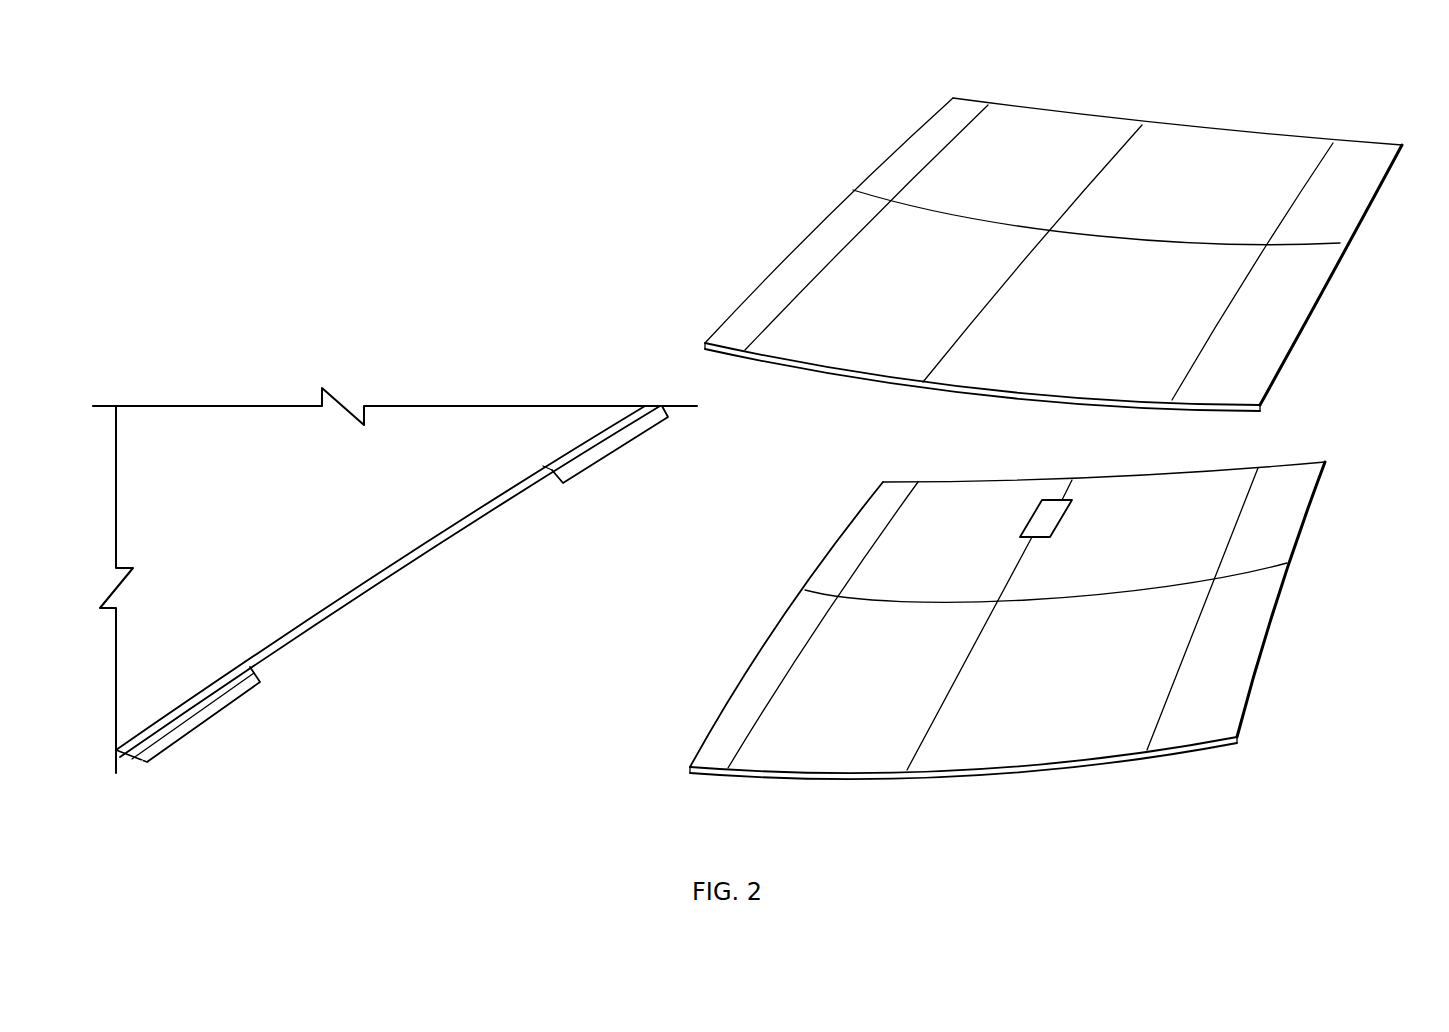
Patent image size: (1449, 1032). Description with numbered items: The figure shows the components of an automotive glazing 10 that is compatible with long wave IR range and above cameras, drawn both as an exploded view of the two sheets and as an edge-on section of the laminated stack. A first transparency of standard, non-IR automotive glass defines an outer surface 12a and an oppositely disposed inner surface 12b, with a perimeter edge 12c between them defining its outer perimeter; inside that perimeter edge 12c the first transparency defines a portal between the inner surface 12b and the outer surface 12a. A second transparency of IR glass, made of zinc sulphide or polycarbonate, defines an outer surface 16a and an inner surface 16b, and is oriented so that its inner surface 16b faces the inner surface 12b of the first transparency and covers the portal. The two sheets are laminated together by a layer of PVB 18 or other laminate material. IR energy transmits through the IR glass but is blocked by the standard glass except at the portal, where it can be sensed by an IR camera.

The automotive glazing 10 is at (480, 380).
The outer surface 12a is at (927, 775).
The inner surface 12b is at (1188, 532).
The perimeter edge 12c is at (768, 648).
The outer surface 16a is at (1040, 142).
The inner surface 16b is at (1325, 285).
The layer of PVB 18 is at (160, 740).